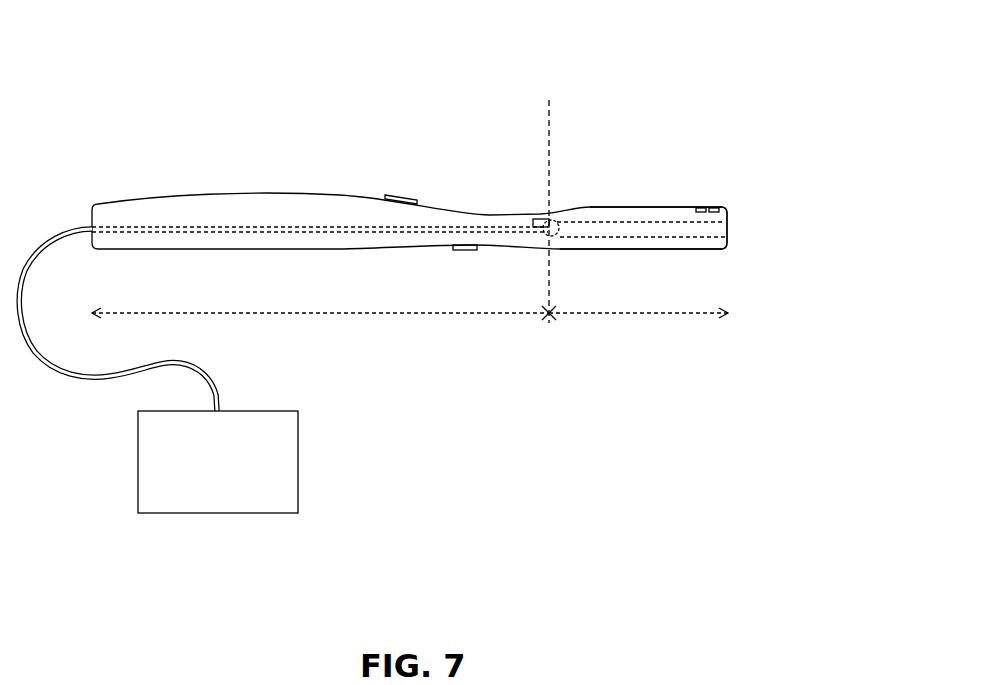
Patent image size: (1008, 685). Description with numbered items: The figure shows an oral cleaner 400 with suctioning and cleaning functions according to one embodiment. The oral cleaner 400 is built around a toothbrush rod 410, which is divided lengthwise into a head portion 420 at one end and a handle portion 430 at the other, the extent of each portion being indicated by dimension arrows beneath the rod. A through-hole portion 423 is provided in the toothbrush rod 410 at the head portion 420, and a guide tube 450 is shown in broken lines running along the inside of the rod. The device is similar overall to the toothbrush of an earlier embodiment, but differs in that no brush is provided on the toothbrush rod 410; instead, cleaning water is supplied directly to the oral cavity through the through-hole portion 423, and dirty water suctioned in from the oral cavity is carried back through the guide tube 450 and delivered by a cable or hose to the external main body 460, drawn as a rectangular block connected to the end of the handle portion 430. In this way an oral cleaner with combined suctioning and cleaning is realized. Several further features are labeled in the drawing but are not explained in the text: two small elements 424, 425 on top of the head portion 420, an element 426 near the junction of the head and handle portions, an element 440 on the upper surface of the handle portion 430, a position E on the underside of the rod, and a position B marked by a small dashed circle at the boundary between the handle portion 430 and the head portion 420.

The oral cleaner 400 is at (796, 36).
The toothbrush rod 410 is at (189, 170).
The head portion 420 is at (638, 325).
The through-hole portion 423 is at (729, 228).
The button 424 is at (701, 208).
The button 425 is at (714, 208).
The sensor 426 is at (540, 219).
The handle portion 430 is at (324, 324).
The switch 440 is at (400, 196).
The guide tube 450 is at (470, 223).
The external main body 460 is at (298, 461).
The element E is at (463, 250).
The point B is at (554, 236).